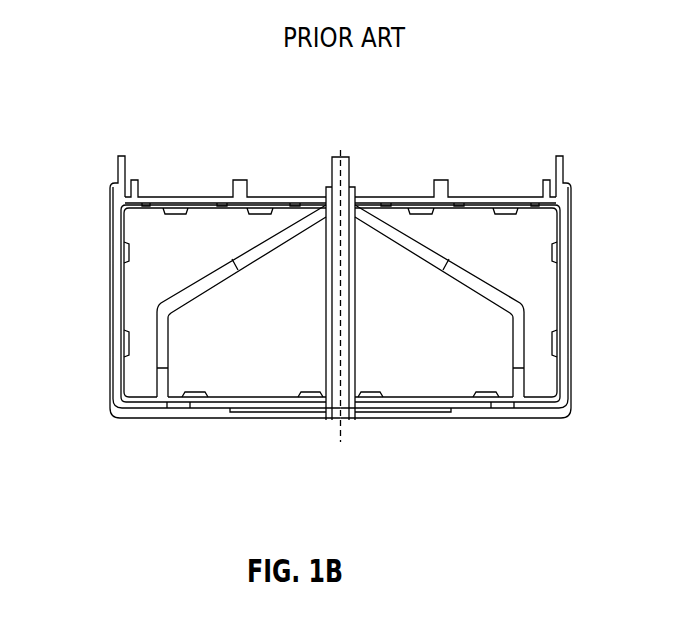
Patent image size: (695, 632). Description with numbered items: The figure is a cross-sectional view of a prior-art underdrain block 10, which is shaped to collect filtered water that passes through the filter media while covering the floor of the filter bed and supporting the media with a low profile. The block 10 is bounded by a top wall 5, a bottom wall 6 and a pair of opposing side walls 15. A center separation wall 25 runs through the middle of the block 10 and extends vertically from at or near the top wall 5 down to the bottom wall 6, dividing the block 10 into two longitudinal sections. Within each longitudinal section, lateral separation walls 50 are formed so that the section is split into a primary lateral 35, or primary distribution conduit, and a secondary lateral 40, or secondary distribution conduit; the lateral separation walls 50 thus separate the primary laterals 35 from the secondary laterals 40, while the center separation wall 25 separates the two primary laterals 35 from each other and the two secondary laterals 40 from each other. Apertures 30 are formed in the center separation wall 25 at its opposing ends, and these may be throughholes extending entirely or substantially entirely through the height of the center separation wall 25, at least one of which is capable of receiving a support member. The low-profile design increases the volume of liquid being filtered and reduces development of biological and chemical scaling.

The underdrain block 10 is at (611, 55).
The side walls 15 is at (110, 275).
The top wall 5 is at (398, 197).
The secondary laterals 40 is at (156, 228).
The lateral separation walls 50 is at (213, 267).
The apertures 30 is at (340, 152).
The center separation wall 25 is at (323, 330).
The primary laterals 35 is at (256, 372).
The bottom wall 6 is at (418, 422).